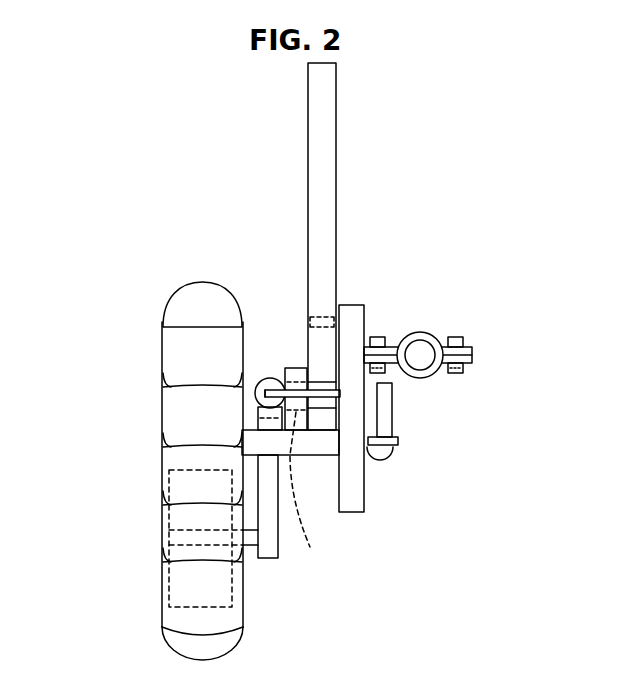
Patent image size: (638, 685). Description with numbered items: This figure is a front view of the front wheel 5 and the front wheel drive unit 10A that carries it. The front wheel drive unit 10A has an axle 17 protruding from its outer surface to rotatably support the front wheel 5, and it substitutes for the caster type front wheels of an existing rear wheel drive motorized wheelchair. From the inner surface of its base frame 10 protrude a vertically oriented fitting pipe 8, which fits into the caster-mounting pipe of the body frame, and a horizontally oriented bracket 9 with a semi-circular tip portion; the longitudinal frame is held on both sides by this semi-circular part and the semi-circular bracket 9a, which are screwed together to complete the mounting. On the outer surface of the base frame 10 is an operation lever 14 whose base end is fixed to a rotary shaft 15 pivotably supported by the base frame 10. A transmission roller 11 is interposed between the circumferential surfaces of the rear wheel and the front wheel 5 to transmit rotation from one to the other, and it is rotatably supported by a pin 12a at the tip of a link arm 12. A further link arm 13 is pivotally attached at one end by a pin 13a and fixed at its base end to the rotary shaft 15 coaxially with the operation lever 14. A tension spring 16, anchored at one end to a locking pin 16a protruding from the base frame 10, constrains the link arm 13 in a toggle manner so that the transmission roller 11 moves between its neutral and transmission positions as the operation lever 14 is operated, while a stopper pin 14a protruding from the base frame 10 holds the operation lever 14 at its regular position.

The front wheel 5 is at (162, 357).
The fitting pipe 8 is at (396, 417).
The bracket 9 is at (424, 331).
The semi-circular bracket 9a is at (437, 377).
The base frame 10 is at (364, 489).
The front wheel drive unit 10A is at (376, 531).
The transmission roller 11 is at (169, 485).
The link arm 12 is at (270, 508).
The pin 12a is at (240, 545).
The link arm 13 is at (292, 370).
The pin 13a is at (311, 493).
The operation lever 14 is at (337, 125).
The stopper pin 14a is at (322, 315).
The rotary shaft 15 is at (317, 377).
The tension spring 16 is at (260, 377).
The locking pin 16a is at (272, 372).
The axle 17 is at (300, 456).